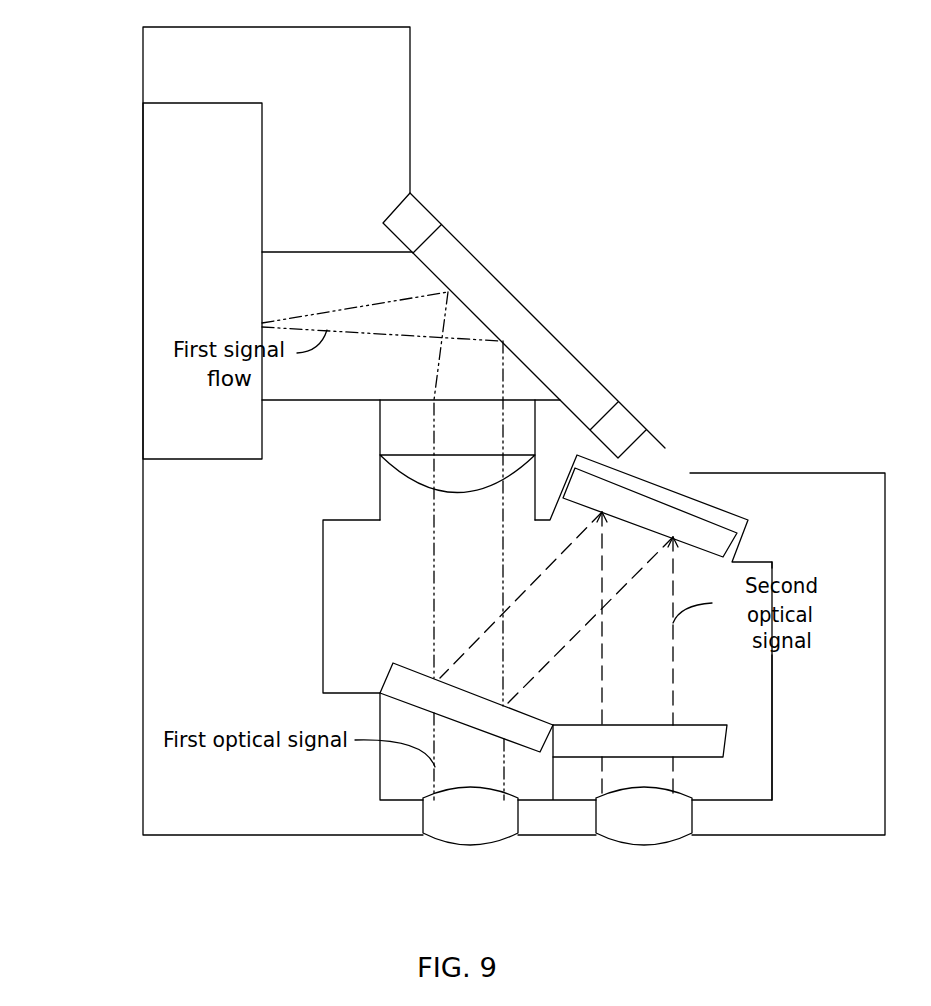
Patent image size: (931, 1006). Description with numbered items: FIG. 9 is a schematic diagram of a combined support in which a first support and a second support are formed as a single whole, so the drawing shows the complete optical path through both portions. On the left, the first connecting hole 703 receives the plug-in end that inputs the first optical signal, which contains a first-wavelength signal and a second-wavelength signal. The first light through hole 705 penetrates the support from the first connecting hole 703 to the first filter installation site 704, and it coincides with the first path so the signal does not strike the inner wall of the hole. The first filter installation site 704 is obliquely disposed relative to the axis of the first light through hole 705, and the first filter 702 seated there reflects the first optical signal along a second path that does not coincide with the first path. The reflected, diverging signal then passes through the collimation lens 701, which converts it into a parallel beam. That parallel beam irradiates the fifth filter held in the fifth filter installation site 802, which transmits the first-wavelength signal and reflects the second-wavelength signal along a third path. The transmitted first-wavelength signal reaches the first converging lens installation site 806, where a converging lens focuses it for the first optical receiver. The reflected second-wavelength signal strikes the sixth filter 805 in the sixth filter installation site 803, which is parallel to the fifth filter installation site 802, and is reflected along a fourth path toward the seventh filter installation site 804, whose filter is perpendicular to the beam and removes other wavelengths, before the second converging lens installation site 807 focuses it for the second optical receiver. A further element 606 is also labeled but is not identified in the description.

The lens 606 is at (400, 503).
The collimation lens 701 is at (410, 415).
The first filter 702 is at (472, 260).
The first connecting hole 703 is at (162, 260).
The first filter installation site 704 is at (425, 215).
The first light through hole 705 is at (363, 267).
The fifth filter installation site 802 is at (442, 670).
The sixth filter installation site 803 is at (705, 507).
The seventh filter installation site 804 is at (655, 728).
The sixth filter 805 is at (614, 490).
The first converging lens installation site 806 is at (468, 846).
The second converging lens installation site 807 is at (640, 843).